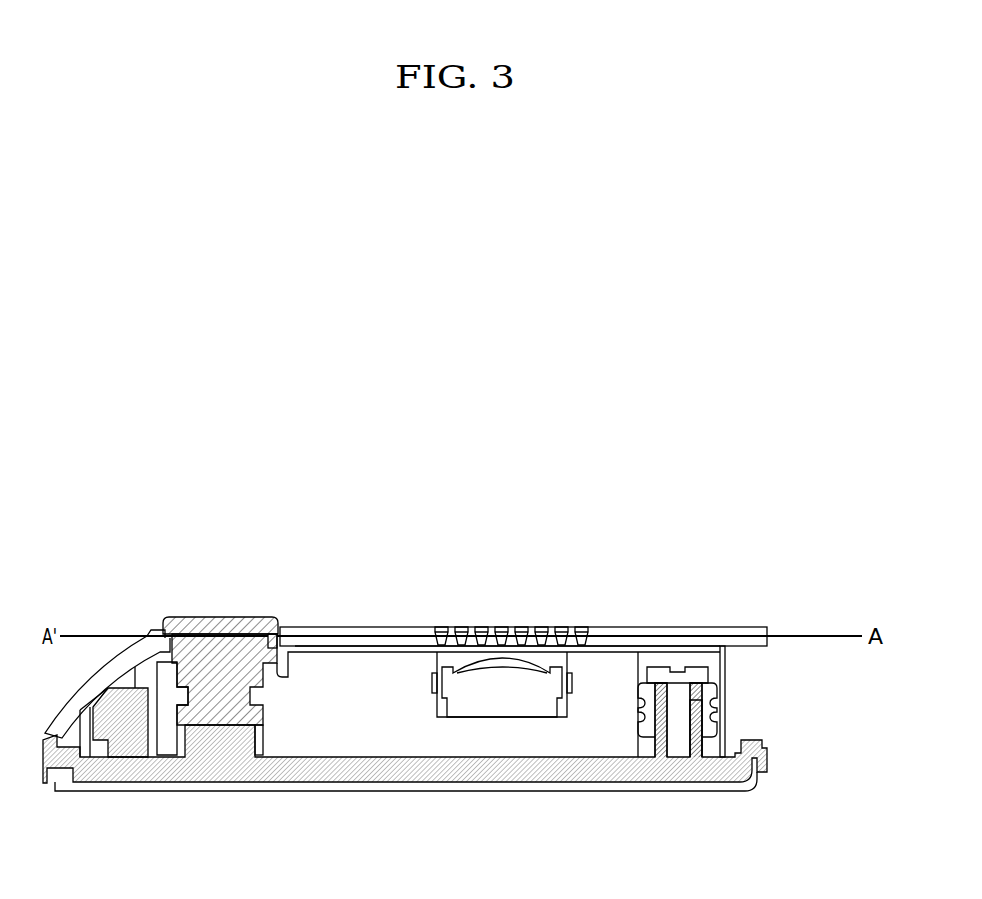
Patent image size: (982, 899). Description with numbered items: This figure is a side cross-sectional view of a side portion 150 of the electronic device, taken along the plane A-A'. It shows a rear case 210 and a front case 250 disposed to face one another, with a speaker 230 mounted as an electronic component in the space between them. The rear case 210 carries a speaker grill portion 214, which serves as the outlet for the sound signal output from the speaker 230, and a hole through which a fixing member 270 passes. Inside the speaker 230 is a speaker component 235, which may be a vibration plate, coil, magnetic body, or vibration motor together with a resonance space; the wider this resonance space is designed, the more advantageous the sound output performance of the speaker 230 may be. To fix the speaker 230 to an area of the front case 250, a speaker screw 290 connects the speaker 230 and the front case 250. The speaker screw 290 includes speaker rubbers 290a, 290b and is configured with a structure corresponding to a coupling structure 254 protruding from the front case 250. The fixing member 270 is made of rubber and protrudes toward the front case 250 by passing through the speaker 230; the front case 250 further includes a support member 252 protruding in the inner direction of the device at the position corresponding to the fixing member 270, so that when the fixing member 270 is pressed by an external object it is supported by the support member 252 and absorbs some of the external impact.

The side portion 150 is at (81, 517).
The fixing member 270 is at (222, 622).
The speaker 230 is at (358, 700).
The speaker grill portion 214 is at (499, 625).
The rear case 210 is at (600, 630).
The speaker screw 290 is at (677, 665).
The speaker rubber 290a is at (708, 693).
The speaker rubber 290b is at (703, 729).
The support member 252 is at (222, 766).
The speaker component 235 is at (495, 698).
The front case 250 is at (584, 775).
The coupling structure 254 is at (694, 742).